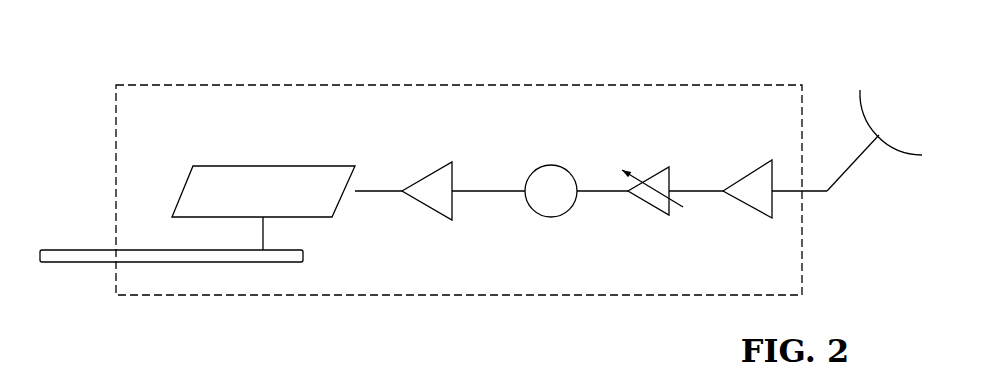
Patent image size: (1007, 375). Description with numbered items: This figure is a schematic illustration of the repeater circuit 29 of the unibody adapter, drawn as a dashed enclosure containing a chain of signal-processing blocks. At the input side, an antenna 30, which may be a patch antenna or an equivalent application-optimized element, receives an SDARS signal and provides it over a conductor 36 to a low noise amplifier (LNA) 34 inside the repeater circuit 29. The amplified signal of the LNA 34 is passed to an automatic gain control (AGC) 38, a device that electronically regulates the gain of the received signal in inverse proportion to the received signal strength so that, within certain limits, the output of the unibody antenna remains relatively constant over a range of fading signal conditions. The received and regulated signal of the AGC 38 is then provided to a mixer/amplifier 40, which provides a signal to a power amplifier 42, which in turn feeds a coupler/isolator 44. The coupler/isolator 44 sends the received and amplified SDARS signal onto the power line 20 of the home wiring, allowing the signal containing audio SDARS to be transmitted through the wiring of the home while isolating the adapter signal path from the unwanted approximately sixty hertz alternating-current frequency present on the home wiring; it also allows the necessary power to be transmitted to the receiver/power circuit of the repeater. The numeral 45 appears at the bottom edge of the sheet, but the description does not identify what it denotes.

The power line 20 is at (285, 263).
The repeater circuit 29 is at (757, 84).
The antenna 30 is at (880, 123).
The low noise amplifier (LNA) 34 is at (753, 170).
The conductor 36 is at (855, 158).
The automatic gain control (AGC) 38 is at (652, 172).
The mixer/amplifier 40 is at (545, 164).
The power amplifier 42 is at (423, 178).
The coupler/isolator 44 is at (291, 166).
The signal path 45 is at (566, 370).